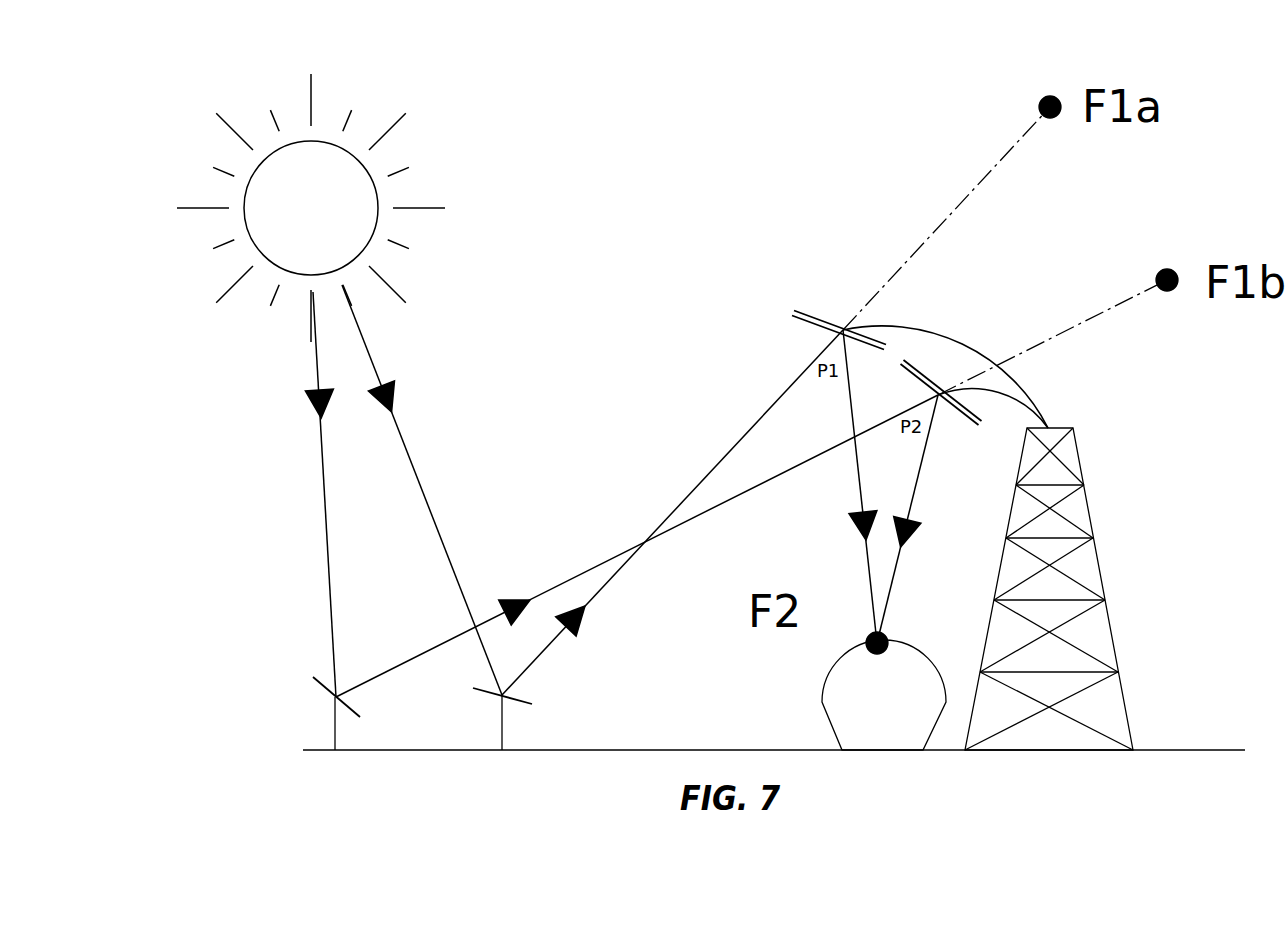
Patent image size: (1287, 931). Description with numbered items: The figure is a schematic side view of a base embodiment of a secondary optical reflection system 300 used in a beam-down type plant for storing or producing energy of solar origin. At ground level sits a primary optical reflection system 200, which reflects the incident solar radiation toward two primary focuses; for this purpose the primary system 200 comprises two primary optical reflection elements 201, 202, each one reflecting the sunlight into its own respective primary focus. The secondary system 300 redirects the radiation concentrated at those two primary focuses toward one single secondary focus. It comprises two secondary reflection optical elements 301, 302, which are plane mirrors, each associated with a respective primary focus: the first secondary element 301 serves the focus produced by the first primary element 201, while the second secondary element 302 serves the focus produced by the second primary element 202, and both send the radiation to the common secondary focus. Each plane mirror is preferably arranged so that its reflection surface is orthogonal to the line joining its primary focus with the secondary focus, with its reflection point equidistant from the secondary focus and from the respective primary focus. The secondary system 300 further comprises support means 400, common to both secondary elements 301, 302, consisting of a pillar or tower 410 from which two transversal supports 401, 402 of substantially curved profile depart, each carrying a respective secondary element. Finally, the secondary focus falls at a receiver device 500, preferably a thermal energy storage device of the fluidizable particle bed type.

The primary optical reflection system 200 is at (361, 673).
The primary optical reflection element 201 is at (320, 684).
The primary optical reflection element 202 is at (488, 692).
The secondary optical reflection system 300 is at (837, 319).
The secondary reflection optical element 301 is at (800, 316).
The secondary reflection optical element 302 is at (913, 371).
The support means 400 is at (1051, 500).
The transversal support 401 is at (918, 329).
The transversal support 402 is at (1015, 399).
The pillar or tower 410 is at (1102, 578).
The receiver device 500 is at (905, 700).